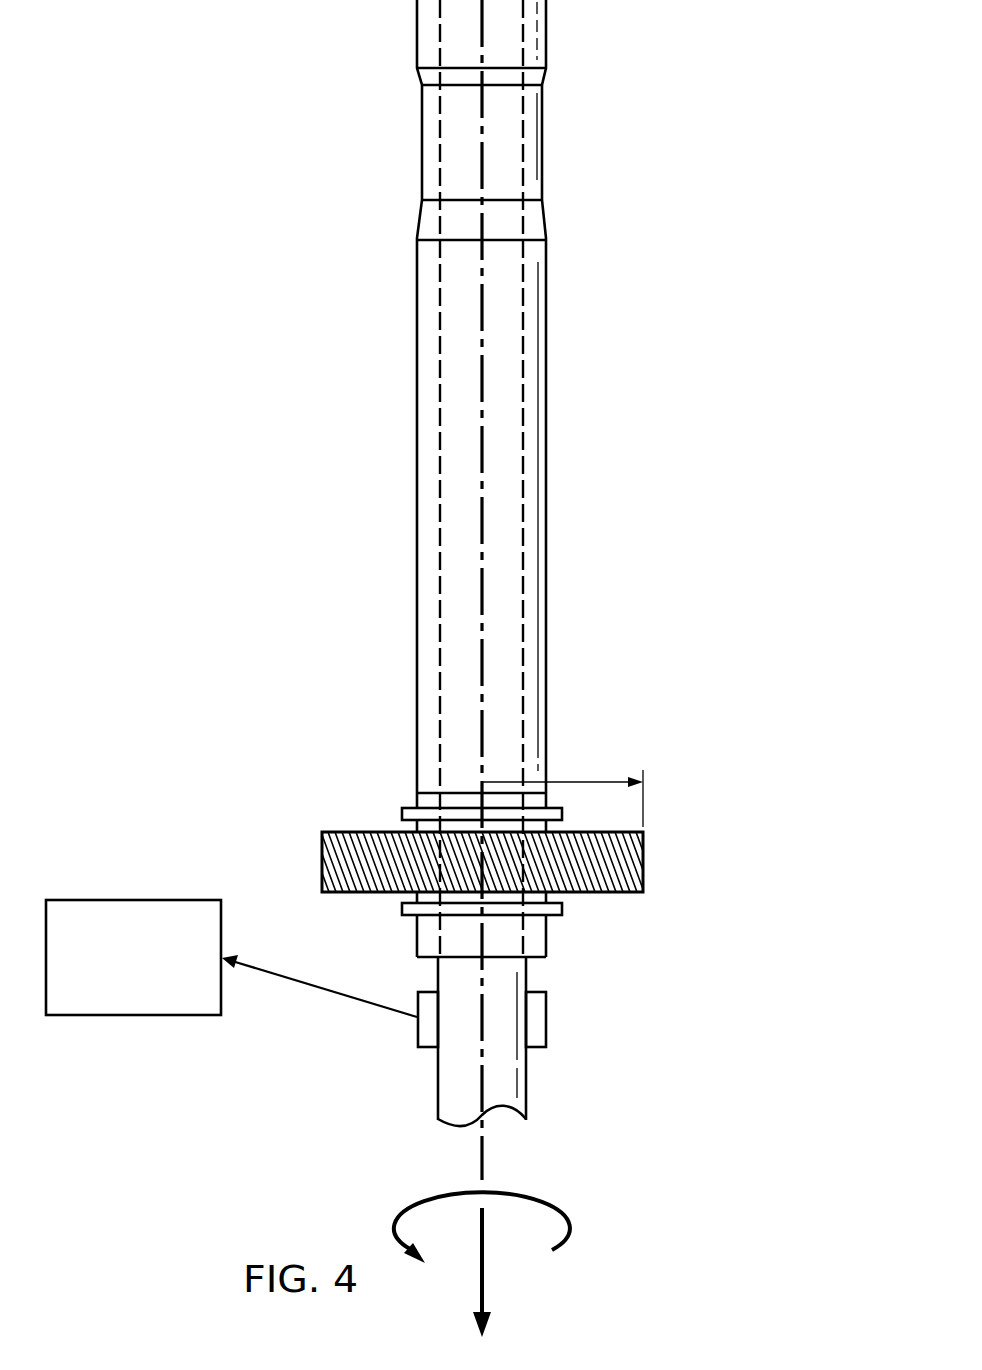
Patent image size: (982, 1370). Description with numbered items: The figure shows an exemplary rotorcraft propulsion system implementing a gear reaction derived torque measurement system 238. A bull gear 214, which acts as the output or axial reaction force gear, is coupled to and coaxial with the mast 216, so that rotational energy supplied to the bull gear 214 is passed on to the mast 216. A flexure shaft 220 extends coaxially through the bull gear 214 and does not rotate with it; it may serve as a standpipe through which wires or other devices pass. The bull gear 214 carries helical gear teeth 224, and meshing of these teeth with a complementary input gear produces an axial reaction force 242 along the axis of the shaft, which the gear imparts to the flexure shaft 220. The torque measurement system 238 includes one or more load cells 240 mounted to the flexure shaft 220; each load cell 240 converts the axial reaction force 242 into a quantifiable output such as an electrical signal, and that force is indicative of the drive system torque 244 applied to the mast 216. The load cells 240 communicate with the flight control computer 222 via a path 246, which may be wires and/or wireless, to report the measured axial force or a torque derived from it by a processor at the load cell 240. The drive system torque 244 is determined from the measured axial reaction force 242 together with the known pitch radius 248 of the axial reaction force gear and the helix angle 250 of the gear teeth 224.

The bull gear 214 is at (363, 832).
The mast 216 is at (546, 311).
The flexure shaft 220 is at (524, 417).
The flight control computer 222 is at (133, 1016).
The gear teeth 224 is at (596, 853).
The torque measurement system 238 is at (676, 1028).
The load cell 240 is at (418, 1037).
The axial reaction force 242 is at (485, 1292).
The drive system torque 244 is at (572, 1228).
The path 246 is at (318, 987).
The pitch radius 248 is at (585, 781).
The helix angle 250 is at (611, 876).